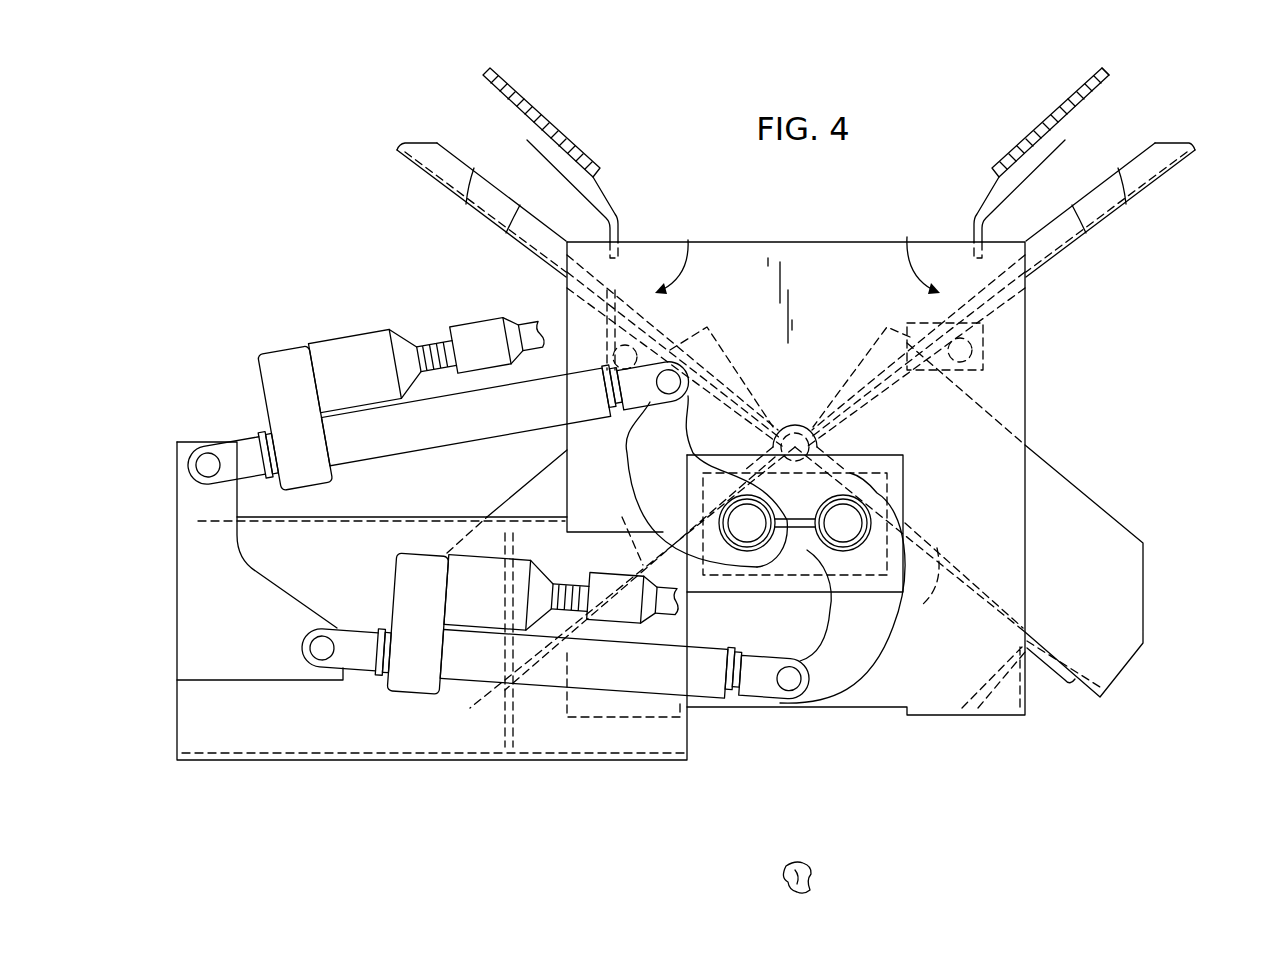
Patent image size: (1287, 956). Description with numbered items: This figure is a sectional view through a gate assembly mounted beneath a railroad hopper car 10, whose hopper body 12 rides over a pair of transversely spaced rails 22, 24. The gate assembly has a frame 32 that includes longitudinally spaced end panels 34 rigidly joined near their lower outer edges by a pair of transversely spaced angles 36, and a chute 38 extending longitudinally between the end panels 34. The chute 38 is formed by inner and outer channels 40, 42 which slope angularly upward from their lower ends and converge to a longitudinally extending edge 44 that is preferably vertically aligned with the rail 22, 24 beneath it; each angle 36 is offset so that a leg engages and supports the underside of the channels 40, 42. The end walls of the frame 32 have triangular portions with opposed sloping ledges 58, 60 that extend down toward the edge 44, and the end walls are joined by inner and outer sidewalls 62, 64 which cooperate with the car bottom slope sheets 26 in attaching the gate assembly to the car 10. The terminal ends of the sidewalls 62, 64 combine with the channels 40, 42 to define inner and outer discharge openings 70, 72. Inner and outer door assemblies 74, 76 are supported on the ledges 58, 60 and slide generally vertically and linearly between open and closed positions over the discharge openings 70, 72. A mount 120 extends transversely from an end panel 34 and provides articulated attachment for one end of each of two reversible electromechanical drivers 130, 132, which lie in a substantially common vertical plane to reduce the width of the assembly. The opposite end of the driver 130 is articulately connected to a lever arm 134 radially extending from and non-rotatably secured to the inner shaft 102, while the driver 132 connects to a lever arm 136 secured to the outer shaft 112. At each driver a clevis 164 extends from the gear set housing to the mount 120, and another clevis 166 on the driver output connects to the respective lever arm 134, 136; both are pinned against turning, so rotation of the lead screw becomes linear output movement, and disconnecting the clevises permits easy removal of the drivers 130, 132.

The railroad hopper car 10 is at (1078, 72).
The hopper body 12 is at (1112, 81).
The rail 22 is at (808, 868).
The rail 24 is at (853, 861).
The car bottom slope sheet 26 is at (522, 98).
The frame 32 is at (1057, 370).
The end panel 34 is at (810, 288).
The angle 36 is at (1042, 676).
The chute 38 is at (922, 591).
The inner channel 40 is at (625, 529).
The outer channel 42 is at (1130, 618).
The longitudinally extending edge 44 is at (795, 430).
The sloping ledge 58 is at (435, 167).
The sloping ledge 60 is at (490, 198).
The inner sidewall 62 is at (619, 216).
The outer sidewall 64 is at (976, 216).
The inner discharge opening 70 is at (678, 243).
The outer discharge opening 72 is at (913, 243).
The inner door assembly 74 is at (563, 268).
The outer door assembly 76 is at (1027, 257).
The inner shaft 102 is at (752, 553).
The outer shaft 112 is at (848, 492).
The mount 120 is at (284, 760).
The reversible electromechanical driver 130 is at (438, 374).
The reversible electromechanical driver 132 is at (378, 588).
The lever arm 134 is at (648, 467).
The lever arm 136 is at (852, 668).
The clevis 164 is at (225, 455).
The clevis 166 is at (632, 440).